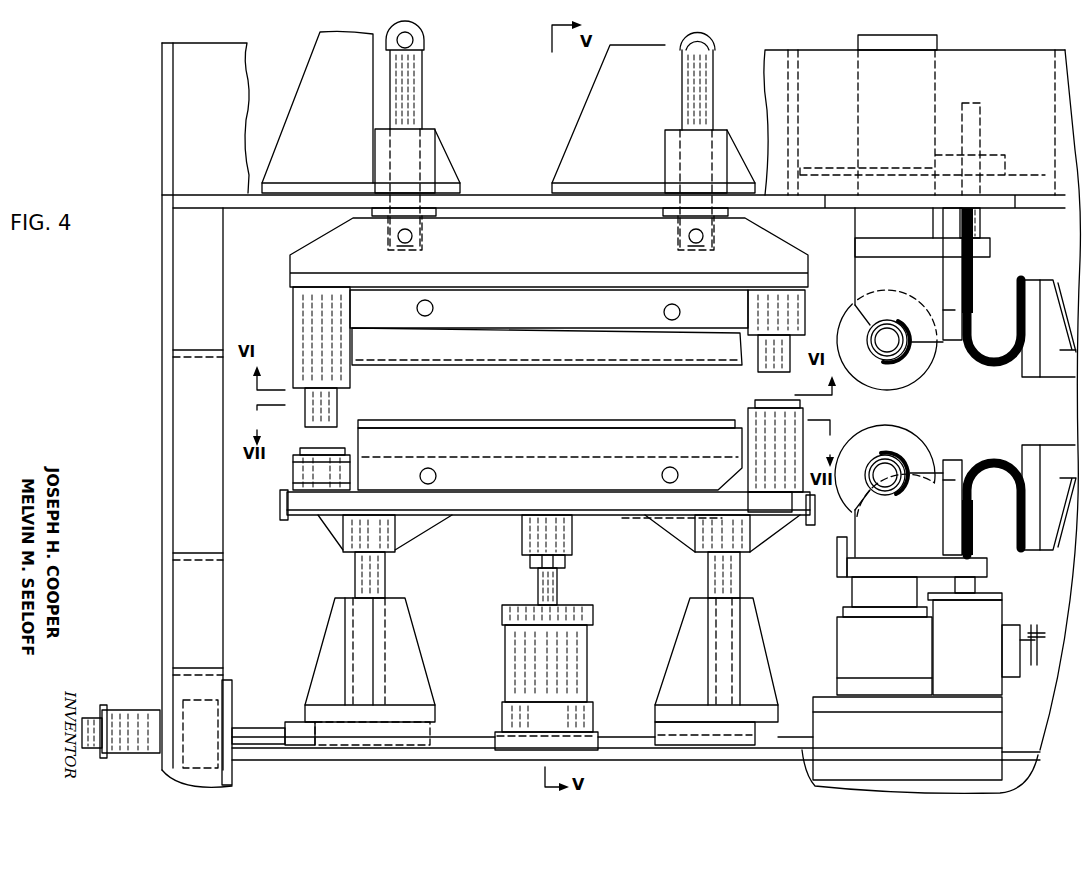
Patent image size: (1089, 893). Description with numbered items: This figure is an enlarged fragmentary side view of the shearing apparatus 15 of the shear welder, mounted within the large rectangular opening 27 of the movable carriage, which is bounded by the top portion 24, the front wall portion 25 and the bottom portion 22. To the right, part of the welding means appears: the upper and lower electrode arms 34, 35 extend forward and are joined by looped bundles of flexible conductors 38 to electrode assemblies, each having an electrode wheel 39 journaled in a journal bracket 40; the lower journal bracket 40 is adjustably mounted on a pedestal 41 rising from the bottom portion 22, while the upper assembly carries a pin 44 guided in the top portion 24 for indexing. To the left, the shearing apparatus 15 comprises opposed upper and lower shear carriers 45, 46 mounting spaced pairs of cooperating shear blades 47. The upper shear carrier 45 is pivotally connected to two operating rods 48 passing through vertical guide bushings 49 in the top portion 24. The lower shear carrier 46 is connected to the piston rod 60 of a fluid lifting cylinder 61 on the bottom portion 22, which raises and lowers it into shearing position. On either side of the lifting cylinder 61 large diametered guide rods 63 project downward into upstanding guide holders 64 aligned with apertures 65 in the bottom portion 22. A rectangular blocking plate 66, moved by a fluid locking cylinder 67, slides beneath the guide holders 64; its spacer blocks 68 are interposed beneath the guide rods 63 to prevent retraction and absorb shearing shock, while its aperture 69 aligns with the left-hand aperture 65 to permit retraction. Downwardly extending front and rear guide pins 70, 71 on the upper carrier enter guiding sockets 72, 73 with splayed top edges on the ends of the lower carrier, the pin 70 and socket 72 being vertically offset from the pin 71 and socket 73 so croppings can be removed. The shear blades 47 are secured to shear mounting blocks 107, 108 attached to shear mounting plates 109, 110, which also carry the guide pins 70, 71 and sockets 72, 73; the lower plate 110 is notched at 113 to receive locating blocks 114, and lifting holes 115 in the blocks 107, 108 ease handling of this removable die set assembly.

The shearing apparatus 15 is at (506, 164).
The bottom portion 22 is at (463, 753).
The top portion 24 is at (237, 82).
The front wall portion 25 is at (178, 382).
The rectangular opening 27 is at (257, 585).
The upper electrode arm 34 is at (1045, 290).
The lower electrode arm 35 is at (1043, 568).
The looped bundle of flexible conductors 38 is at (993, 372).
The electrode wheel 39 is at (853, 445).
The journal bracket 40 is at (940, 340).
The pedestal 41 is at (845, 630).
The pin 44 is at (978, 226).
The upper shear carrier 45 is at (549, 339).
The lower shear carrier 46 is at (550, 455).
The shear blades 47 is at (465, 350).
The operating rods 48 is at (417, 95).
The guide bushings 49 is at (422, 147).
The piston rod 60 is at (558, 592).
The fluid lifting cylinder 61 is at (572, 662).
The guide rods 63 is at (357, 578).
The guide holders 64 is at (325, 667).
The apertures 65 is at (376, 762).
The rectangular blocking plate 66 is at (628, 743).
The fluid locking cylinder 67 is at (125, 723).
The spacer blocks 68 is at (430, 687).
The aperture 69 is at (437, 727).
The front guide pin 70 is at (305, 405).
The rear guide pin 71 is at (792, 362).
The guiding socket 72 is at (293, 477).
The guiding socket 73 is at (803, 448).
The shear mounting block 107 is at (372, 305).
The shear mounting block 108 is at (500, 440).
The shear mounting plate 109 is at (292, 275).
The shear mounting plate 110 is at (350, 497).
The notch 113 is at (780, 500).
The locating blocks 114 is at (745, 442).
The lifting holes 115 is at (668, 318).